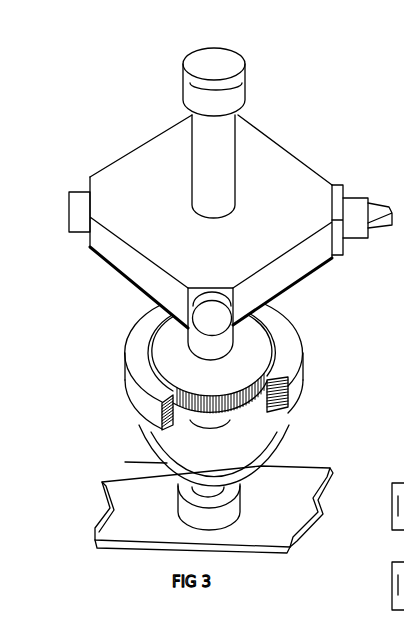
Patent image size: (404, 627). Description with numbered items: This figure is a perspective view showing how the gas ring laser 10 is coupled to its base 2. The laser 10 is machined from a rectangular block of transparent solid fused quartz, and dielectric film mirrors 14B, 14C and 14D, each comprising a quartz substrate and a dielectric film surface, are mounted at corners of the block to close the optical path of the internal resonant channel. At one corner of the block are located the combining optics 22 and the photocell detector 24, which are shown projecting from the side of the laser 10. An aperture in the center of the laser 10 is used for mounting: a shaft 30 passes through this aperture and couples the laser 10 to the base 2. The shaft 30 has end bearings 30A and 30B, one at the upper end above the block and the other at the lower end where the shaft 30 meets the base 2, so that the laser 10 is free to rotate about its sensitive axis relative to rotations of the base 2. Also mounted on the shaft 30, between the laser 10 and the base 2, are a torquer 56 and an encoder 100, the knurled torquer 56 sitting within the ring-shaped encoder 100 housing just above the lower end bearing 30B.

The base 2 is at (282, 520).
The laser 10 is at (183, 243).
The dielectric film mirror 14B is at (83, 220).
The dielectric film mirror 14C is at (207, 323).
The dielectric film mirror 14D is at (337, 185).
The combining optics 22 is at (357, 236).
The photocell detector 24 is at (382, 230).
The shaft 30 is at (203, 163).
The end bearing 30A is at (198, 93).
The end bearing 30B is at (228, 510).
The torquer 56 is at (140, 400).
The encoder 100 is at (162, 440).